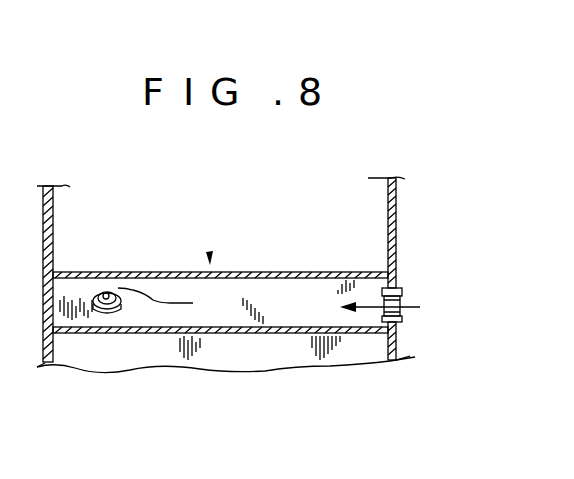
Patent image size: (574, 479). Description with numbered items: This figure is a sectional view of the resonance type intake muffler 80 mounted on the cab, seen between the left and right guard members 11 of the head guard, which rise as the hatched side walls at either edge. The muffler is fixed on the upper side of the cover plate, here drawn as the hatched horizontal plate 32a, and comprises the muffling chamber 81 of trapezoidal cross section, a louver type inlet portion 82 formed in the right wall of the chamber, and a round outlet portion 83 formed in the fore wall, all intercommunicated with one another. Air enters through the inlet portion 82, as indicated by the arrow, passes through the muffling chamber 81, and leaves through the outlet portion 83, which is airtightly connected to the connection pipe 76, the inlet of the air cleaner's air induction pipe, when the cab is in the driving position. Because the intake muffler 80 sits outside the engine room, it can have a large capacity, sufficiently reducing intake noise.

The guard member 11 is at (53, 192).
The top plate 32a is at (297, 272).
The connection pipe 76 is at (108, 290).
The intake muffler 80 is at (210, 262).
The muffling chamber 81 is at (253, 293).
The louver type inlet portion 82 is at (400, 297).
The round outlet portion 83 is at (112, 309).